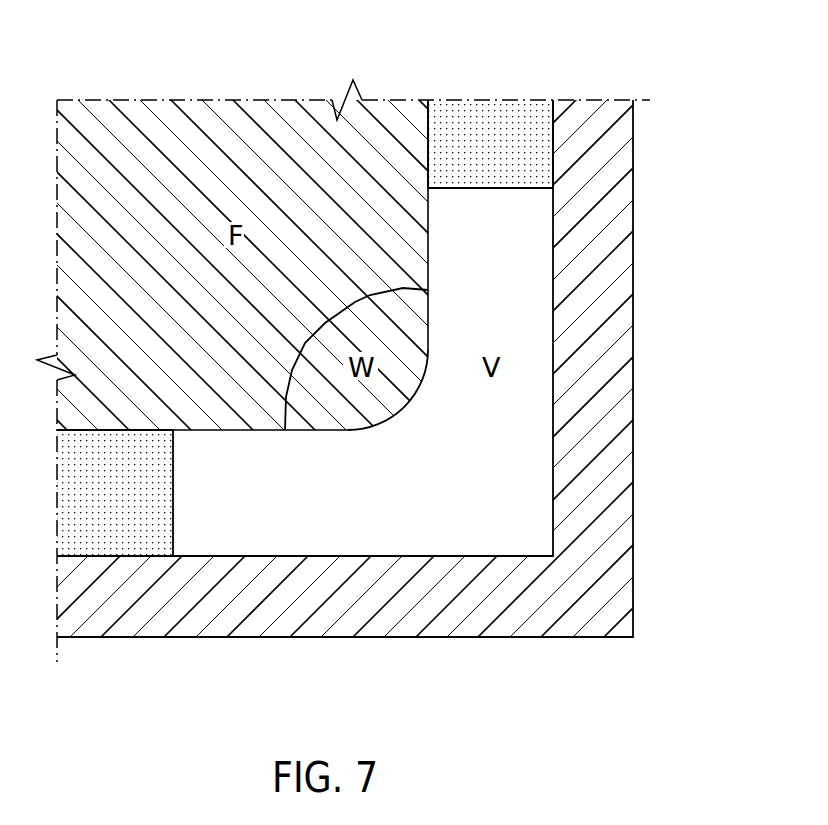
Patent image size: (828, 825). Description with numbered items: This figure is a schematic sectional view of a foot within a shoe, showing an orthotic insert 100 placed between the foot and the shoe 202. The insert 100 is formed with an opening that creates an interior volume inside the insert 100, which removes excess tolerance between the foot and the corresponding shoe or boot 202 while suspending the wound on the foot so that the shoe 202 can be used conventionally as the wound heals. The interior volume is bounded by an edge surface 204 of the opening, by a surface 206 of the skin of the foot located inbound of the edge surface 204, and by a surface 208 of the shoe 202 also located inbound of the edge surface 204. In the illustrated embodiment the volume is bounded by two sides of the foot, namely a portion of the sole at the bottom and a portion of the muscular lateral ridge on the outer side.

The orthotic insert 100 is at (495, 128).
The shoe 202 is at (603, 305).
The edge surface 204 is at (173, 491).
The surface of the skin of the foot 206 is at (355, 431).
The surface of the shoe 208 is at (443, 556).